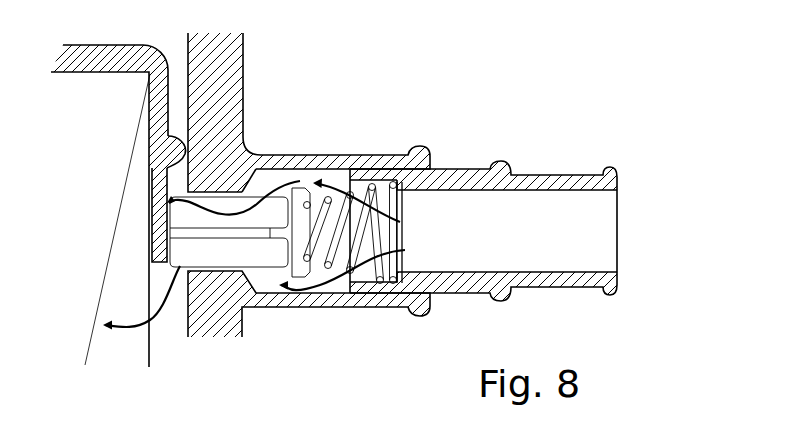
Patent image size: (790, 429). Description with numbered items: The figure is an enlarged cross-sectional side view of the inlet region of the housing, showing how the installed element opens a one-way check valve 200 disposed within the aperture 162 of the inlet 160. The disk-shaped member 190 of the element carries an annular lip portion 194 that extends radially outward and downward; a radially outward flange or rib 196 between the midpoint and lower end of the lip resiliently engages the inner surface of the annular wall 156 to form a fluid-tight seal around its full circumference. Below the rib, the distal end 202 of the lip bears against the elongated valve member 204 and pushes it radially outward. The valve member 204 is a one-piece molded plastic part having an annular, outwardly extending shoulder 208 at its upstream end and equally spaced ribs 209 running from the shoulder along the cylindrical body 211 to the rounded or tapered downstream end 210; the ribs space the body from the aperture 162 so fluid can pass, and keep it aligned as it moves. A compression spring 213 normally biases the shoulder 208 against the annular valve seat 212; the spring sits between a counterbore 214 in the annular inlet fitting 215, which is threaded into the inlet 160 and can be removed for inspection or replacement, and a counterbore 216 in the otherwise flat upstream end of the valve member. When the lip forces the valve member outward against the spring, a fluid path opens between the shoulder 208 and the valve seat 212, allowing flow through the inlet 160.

The annular wall 156 is at (232, 52).
The inlet 160 is at (367, 156).
The aperture 162 is at (236, 280).
The disk-shaped member 190 is at (83, 69).
The annular lip portion 194 is at (157, 122).
The rib 196 is at (170, 143).
The one-way check valve 200 is at (340, 289).
The distal end 202 is at (157, 256).
The valve member 204 is at (233, 208).
The shoulder 208 is at (302, 201).
The ribs 209 is at (207, 232).
The tapered end 210 is at (183, 222).
The cylindrical body 211 is at (192, 263).
The valve seat 212 is at (303, 193).
The spring 213 is at (393, 203).
The counterbore 214 is at (384, 188).
The inlet fitting 215 is at (557, 183).
The counterbore 216 is at (300, 224).